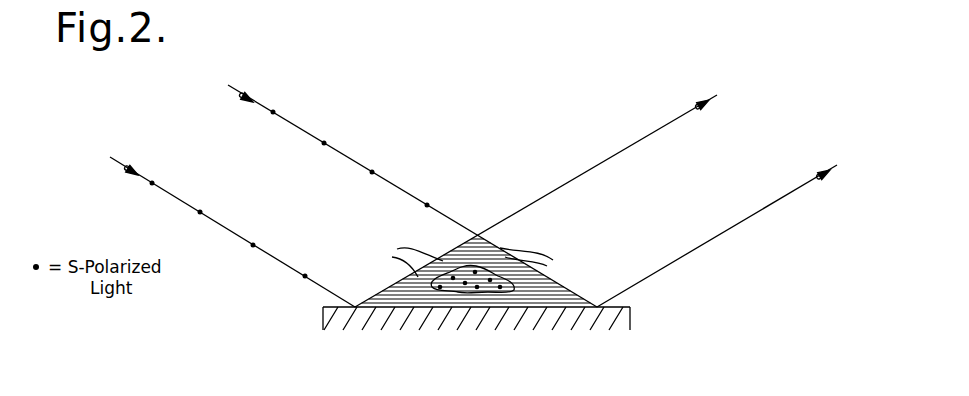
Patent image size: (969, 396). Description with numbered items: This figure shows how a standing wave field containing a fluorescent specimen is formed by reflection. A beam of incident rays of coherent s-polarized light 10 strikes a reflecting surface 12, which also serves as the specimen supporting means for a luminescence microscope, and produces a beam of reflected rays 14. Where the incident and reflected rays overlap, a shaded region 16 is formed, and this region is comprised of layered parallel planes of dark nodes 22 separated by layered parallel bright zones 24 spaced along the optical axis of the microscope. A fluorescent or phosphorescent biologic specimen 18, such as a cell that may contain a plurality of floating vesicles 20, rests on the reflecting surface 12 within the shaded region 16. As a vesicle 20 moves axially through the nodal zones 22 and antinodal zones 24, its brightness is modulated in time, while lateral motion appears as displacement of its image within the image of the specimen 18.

The incident rays of coherent s-polarized light 10 is at (121, 166).
The reflecting surface 12 is at (557, 307).
The reflected rays 14 is at (678, 117).
The shaded region 16 is at (456, 302).
The biologic specimen 18 is at (500, 290).
The floating vesicles 20 is at (460, 283).
The dark nodes 22 is at (543, 253).
The bright zones 24 is at (404, 259).